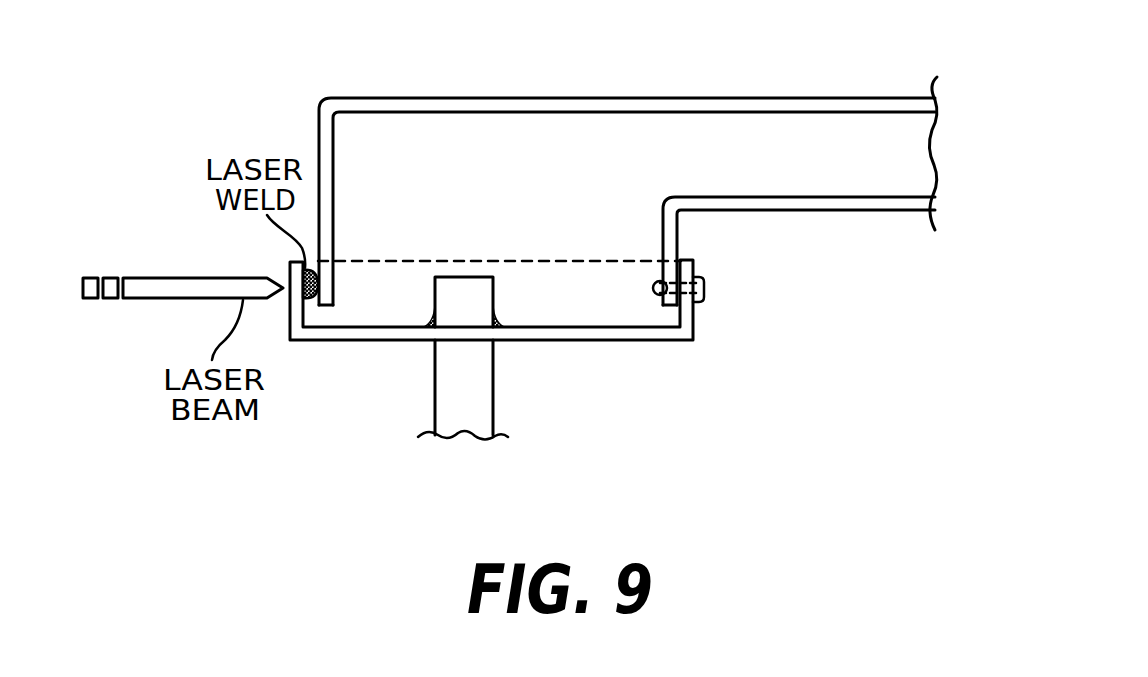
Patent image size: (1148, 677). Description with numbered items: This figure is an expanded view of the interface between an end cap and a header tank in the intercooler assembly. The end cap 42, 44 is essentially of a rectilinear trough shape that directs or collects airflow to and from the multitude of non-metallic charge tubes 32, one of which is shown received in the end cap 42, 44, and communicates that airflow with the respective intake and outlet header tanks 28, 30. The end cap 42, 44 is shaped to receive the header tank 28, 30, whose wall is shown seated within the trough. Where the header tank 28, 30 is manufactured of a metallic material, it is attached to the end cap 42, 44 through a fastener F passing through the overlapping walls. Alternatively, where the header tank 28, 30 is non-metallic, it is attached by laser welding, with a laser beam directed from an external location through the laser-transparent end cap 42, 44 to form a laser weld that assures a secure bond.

The intake header tank 28 is at (627, 163).
The outlet header tank 30 is at (750, 98).
The end cap 42 is at (491, 347).
The end cap 44 is at (552, 340).
The non-metallic charge tube 32 is at (443, 405).
The fastener F is at (707, 295).